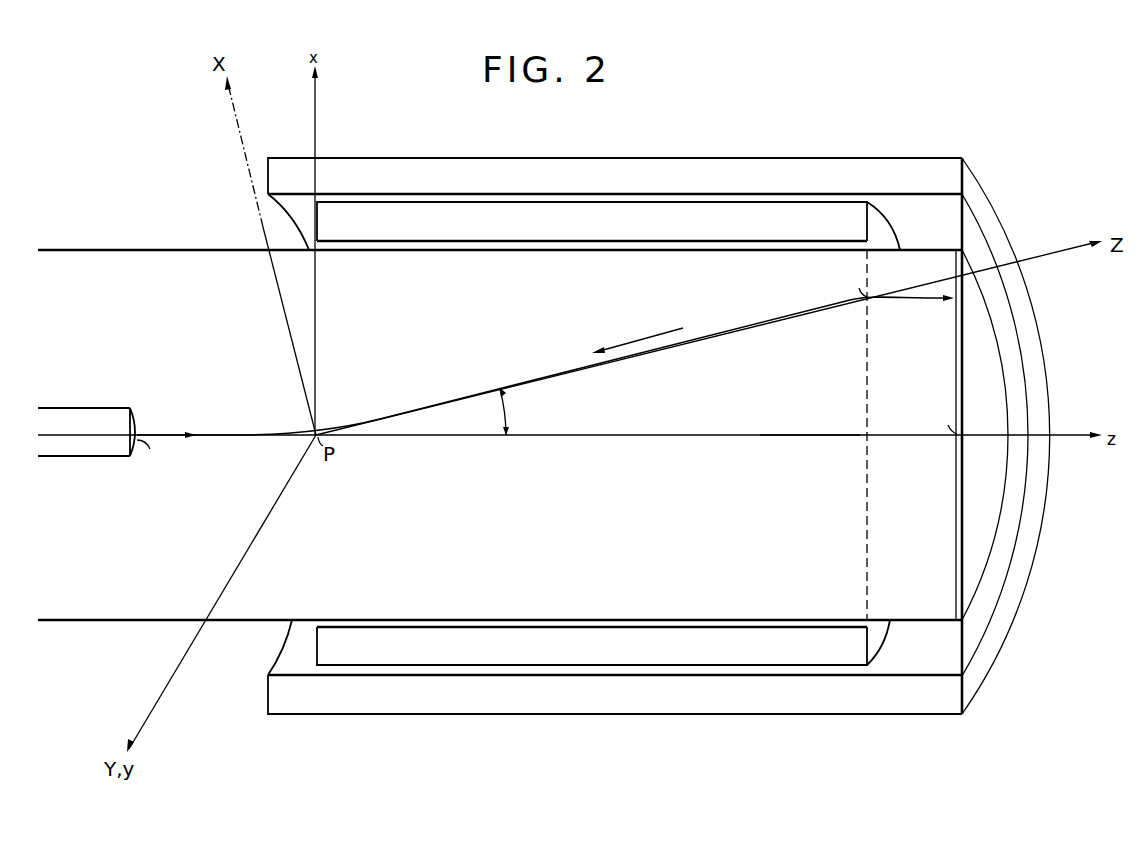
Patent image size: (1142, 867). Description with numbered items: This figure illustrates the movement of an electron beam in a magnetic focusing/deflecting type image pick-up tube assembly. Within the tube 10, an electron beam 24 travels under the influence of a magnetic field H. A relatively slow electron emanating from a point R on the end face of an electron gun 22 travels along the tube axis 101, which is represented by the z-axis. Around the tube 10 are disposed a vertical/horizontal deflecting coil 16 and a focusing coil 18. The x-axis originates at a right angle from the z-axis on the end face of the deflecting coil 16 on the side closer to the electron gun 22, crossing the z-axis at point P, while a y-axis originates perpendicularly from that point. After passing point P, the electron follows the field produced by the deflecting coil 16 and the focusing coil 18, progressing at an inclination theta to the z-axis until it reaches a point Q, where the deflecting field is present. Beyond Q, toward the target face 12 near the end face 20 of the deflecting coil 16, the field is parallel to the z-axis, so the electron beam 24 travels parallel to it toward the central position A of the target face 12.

The image pick-up tube 10 is at (922, 615).
The tube axis 101 is at (807, 435).
The target face 12 is at (956, 556).
The vertical/horizontal deflecting coil 16 is at (869, 226).
The focusing coil 18 is at (916, 165).
The end face of the deflecting coil 20 is at (866, 373).
The electron gun 22 is at (110, 418).
The electron beam 24 is at (568, 372).